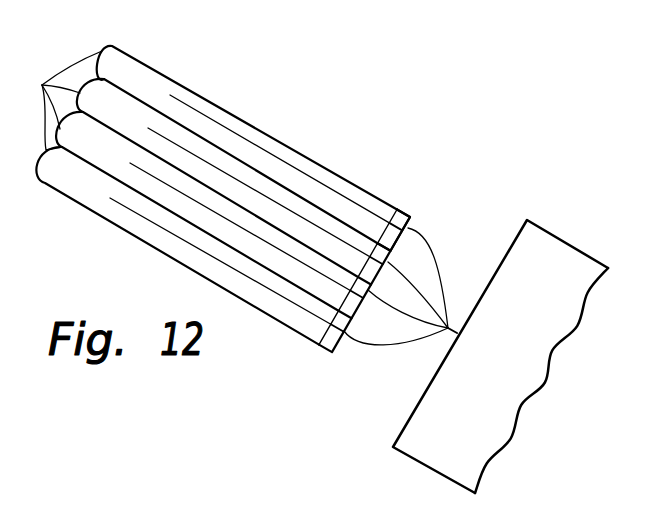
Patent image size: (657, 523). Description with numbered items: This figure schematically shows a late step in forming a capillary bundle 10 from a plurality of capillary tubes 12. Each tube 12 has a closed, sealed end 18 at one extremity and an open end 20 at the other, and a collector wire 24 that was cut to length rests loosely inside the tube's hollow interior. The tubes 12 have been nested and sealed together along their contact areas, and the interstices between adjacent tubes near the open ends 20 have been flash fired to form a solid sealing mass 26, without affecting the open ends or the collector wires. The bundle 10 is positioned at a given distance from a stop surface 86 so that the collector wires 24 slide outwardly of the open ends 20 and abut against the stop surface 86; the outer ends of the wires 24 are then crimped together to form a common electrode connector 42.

The bundle 10 is at (278, 128).
The capillary tube 12 is at (115, 108).
The sealed end 18 is at (42, 85).
The open end 20 is at (411, 222).
The collector wire 24 is at (234, 176).
The sealing mass 26 is at (394, 214).
The common electrode connector 42 is at (446, 330).
The stop surface 86 is at (518, 230).